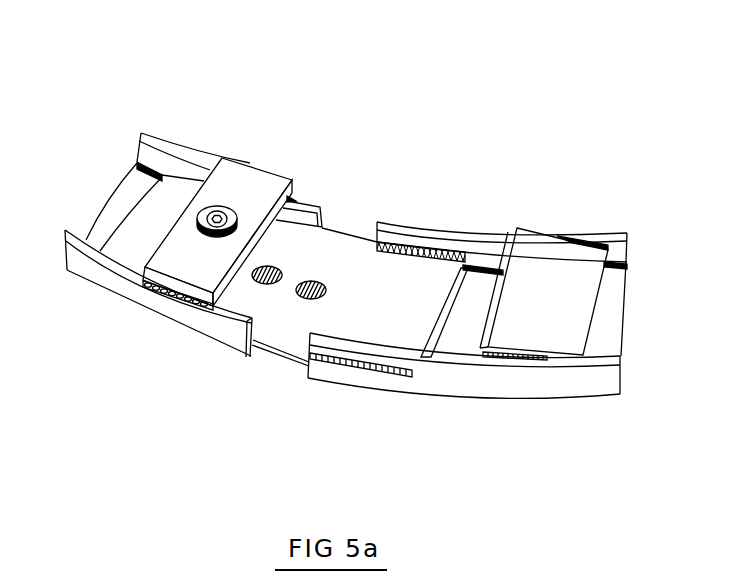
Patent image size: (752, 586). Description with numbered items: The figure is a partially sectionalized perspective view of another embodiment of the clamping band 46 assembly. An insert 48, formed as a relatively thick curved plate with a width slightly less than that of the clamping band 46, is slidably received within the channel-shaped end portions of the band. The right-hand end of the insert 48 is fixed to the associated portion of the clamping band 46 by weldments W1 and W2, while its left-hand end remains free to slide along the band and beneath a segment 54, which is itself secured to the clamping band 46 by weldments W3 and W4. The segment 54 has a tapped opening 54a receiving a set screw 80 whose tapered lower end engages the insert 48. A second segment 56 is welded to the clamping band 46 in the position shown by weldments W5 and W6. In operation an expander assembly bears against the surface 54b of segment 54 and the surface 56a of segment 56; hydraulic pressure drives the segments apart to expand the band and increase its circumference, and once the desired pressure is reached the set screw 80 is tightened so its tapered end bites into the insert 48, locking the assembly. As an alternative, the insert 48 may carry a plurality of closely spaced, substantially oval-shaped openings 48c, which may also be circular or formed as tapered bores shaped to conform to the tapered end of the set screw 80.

The clamping band 46 is at (160, 108).
The insert 48 is at (287, 340).
The openings 48c is at (278, 269).
The segment 54 is at (230, 168).
The tapped opening 54a is at (216, 236).
The surface 54b is at (293, 178).
The segment 56 is at (553, 300).
The surface 56a is at (508, 262).
The set screw 80 is at (226, 205).
The weldment W1 is at (413, 250).
The weldment W2 is at (363, 373).
The weldment W3 is at (150, 282).
The weldment W4 is at (294, 200).
The weldment W5 is at (599, 240).
The weldment W6 is at (508, 357).